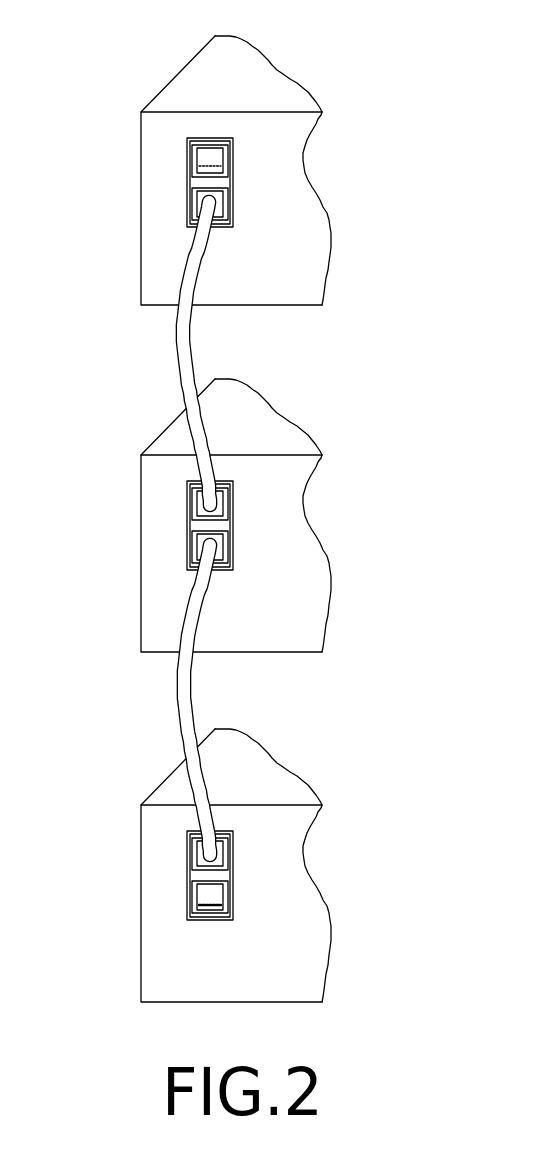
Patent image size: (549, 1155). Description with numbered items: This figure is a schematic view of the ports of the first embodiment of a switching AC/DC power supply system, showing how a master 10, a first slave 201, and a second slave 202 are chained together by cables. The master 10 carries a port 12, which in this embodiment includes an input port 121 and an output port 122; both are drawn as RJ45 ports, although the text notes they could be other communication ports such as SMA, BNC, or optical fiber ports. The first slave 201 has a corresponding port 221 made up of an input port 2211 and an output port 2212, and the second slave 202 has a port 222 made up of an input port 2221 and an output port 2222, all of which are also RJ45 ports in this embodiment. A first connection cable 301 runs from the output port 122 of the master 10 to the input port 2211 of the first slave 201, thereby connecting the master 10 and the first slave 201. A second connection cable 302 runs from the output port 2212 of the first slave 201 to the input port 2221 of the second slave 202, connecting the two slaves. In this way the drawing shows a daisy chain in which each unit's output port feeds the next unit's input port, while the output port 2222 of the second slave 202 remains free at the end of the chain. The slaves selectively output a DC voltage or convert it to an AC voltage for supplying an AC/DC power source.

The master 10 is at (345, 271).
The port 12 is at (195, 138).
The input port 121 is at (225, 160).
The output port 122 is at (225, 202).
The first connection cable 301 is at (177, 352).
The first slave 201 is at (330, 617).
The port 221 is at (224, 495).
The input port 2211 is at (225, 503).
The output port 2212 is at (225, 550).
The second connection cable 302 is at (177, 702).
The second slave 202 is at (330, 967).
The port 222 is at (224, 845).
The input port 2221 is at (225, 853).
The output port 2222 is at (225, 900).